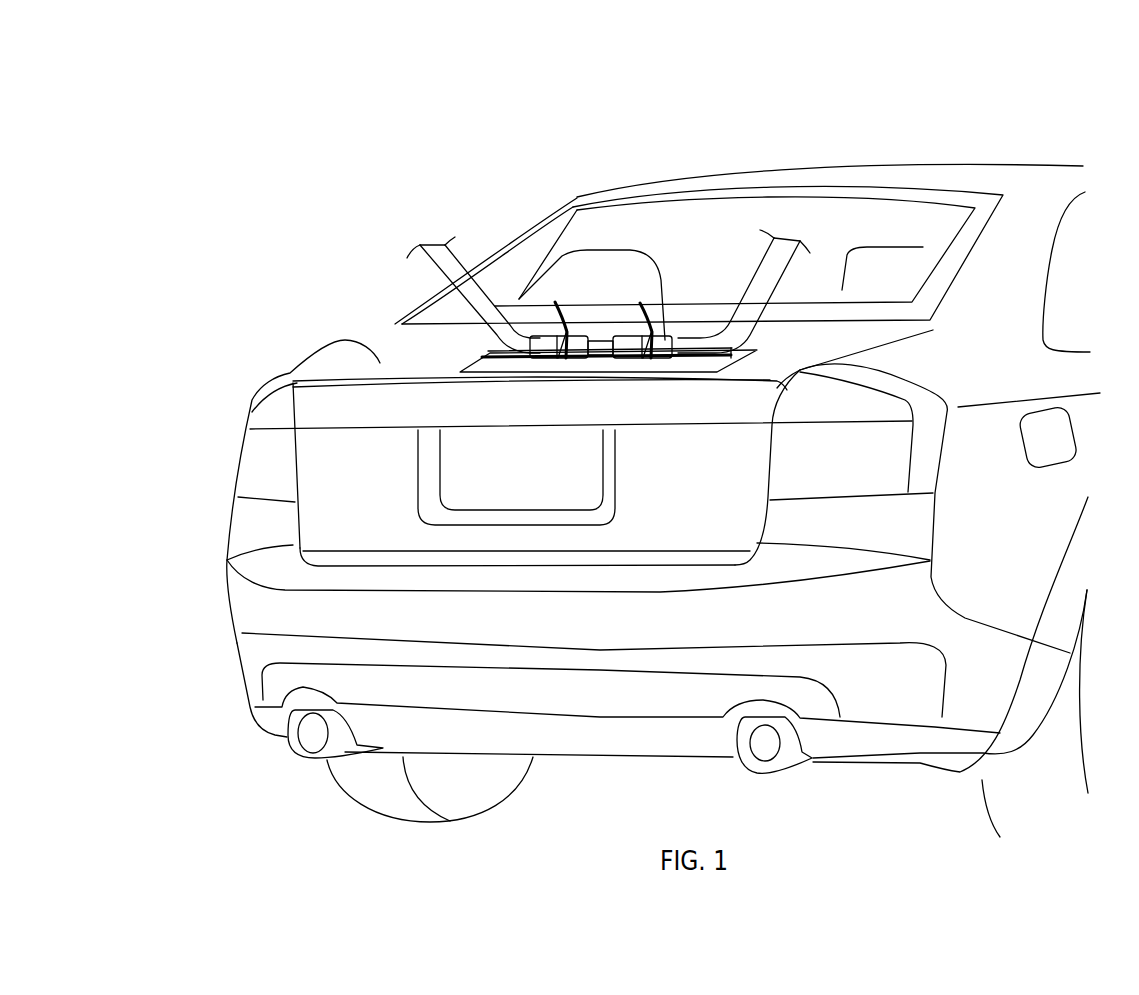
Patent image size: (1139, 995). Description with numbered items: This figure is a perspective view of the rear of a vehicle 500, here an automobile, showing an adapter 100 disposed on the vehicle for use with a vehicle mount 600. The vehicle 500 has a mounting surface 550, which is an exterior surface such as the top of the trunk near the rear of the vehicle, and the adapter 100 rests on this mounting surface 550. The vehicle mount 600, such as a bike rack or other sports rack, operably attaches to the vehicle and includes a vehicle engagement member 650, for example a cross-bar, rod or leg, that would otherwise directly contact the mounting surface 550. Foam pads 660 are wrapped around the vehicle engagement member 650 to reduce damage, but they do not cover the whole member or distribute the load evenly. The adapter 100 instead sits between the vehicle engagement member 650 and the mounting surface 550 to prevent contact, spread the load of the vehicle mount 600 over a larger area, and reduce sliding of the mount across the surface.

The adapter 100 is at (537, 233).
The vehicle 500 is at (638, 432).
The mounting surface 550 is at (318, 340).
The vehicle mount 600 is at (455, 290).
The vehicle engagement member 650 is at (693, 350).
The foam pads 660 is at (639, 226).